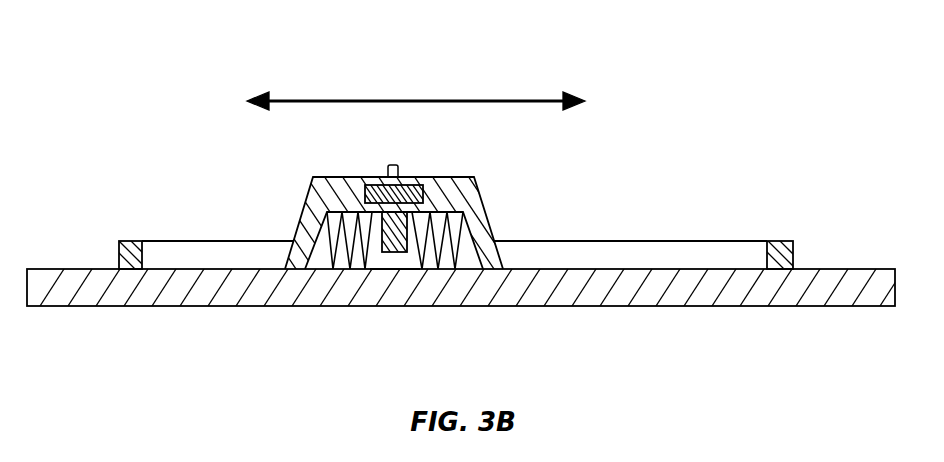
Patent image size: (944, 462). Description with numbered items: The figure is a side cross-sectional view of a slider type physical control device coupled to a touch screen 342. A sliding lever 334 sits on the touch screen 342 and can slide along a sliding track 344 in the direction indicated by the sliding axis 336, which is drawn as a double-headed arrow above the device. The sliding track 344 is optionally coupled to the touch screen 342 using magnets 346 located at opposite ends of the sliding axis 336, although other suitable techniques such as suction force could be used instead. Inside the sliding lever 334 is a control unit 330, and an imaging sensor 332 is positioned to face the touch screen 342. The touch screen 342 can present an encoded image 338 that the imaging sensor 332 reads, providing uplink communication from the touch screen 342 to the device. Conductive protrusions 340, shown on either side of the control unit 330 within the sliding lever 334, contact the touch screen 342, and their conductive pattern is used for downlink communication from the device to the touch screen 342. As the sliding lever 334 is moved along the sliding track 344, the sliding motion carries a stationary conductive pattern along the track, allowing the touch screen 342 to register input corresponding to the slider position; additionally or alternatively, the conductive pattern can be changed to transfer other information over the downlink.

The control unit 330 is at (410, 228).
The imaging sensor 332 is at (410, 228).
The sliding lever 334 is at (494, 240).
The sliding axis 336 is at (497, 100).
The encoded image 338 is at (386, 262).
The conductive protrusions 340 is at (300, 240).
The touch screen 342 is at (865, 269).
The sliding track 344 is at (655, 241).
The magnets 346 is at (131, 241).